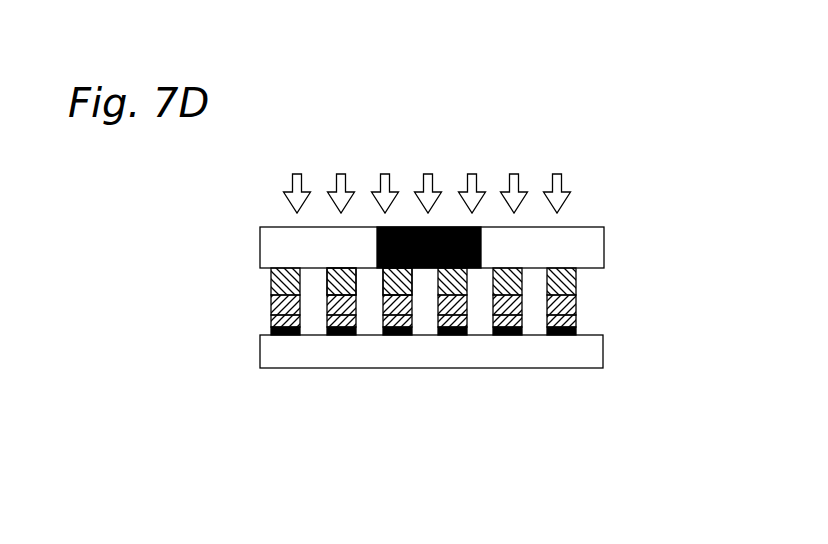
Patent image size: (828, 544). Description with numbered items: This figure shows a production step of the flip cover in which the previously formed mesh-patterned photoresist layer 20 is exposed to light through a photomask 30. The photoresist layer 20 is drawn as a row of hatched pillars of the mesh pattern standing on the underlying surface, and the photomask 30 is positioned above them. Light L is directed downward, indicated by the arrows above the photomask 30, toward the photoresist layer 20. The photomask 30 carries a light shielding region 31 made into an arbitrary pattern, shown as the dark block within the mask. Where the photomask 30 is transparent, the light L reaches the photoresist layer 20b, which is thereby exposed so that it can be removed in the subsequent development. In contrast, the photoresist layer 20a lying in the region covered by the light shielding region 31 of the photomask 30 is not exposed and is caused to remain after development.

The light L is at (387, 183).
The photomask 30 is at (585, 246).
The light shielding region 31 is at (481, 247).
The photoresist layer 20 is at (575, 287).
The photoresist layer 20a is at (413, 285).
The photoresist layer 20b is at (325, 290).